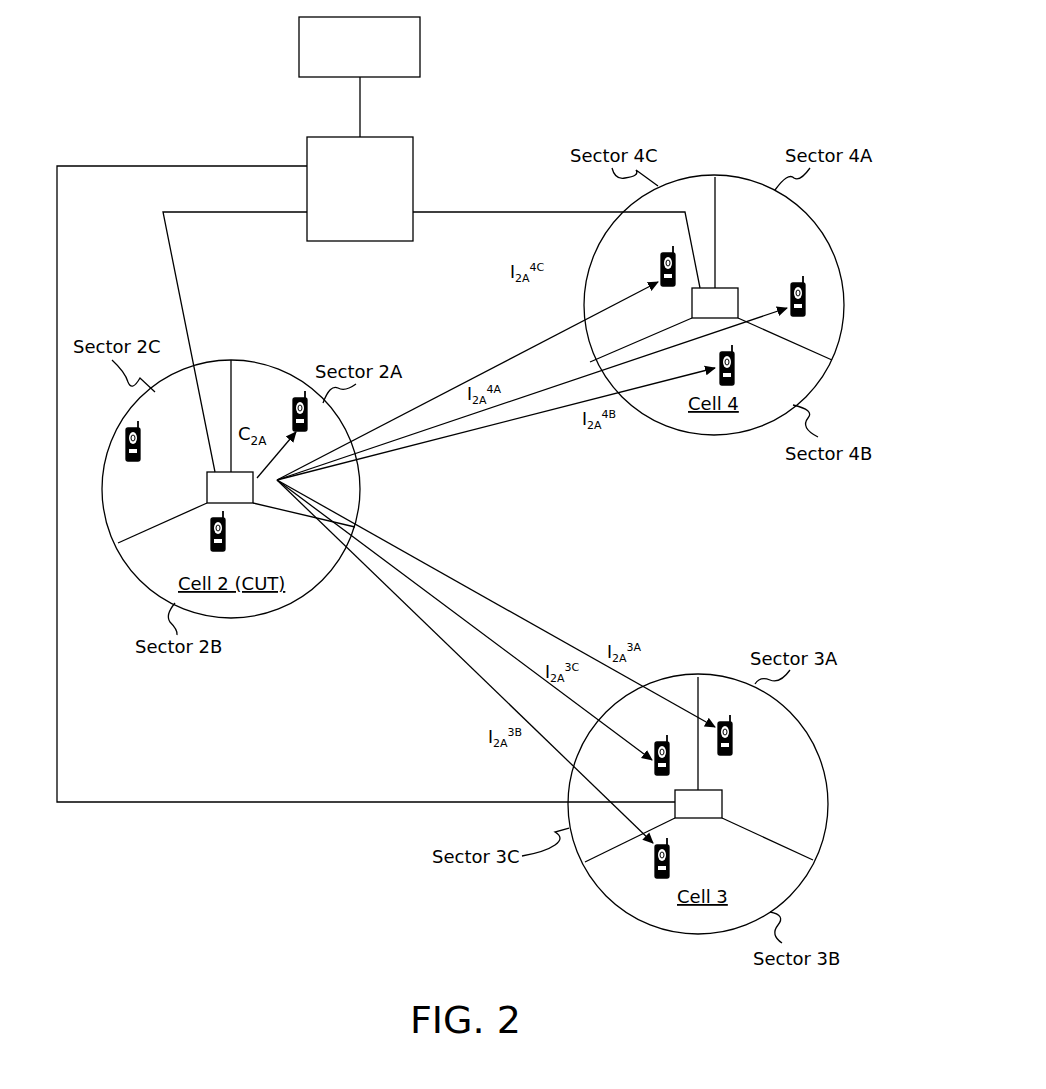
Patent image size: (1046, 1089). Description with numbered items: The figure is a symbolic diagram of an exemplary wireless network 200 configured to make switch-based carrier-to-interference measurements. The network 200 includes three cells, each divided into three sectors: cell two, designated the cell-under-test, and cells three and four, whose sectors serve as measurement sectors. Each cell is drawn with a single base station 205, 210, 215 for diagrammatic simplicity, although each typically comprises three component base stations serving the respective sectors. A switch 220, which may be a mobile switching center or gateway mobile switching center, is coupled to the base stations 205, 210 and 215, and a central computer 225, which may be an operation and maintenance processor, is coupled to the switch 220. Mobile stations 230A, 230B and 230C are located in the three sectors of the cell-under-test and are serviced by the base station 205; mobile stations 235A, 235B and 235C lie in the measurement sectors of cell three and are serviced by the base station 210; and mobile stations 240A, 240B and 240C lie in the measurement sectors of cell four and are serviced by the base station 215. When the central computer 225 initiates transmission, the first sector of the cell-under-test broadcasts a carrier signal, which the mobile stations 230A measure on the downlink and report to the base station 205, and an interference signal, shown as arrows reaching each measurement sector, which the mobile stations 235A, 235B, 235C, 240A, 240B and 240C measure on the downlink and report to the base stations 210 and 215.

The wireless network 200 is at (222, 960).
The base station 205 is at (206, 480).
The base station 210 is at (722, 803).
The base station 215 is at (730, 288).
The switch 220 is at (413, 166).
The central computer 225 is at (421, 47).
The mobile stations 230A is at (292, 406).
The mobile stations 230B is at (227, 544).
The mobile stations 230C is at (133, 462).
The mobile stations 235A is at (733, 744).
The mobile stations 235B is at (670, 858).
The mobile stations 235C is at (658, 742).
The mobile stations 240A is at (796, 282).
The mobile stations 240B is at (735, 366).
The mobile stations 240C is at (661, 264).